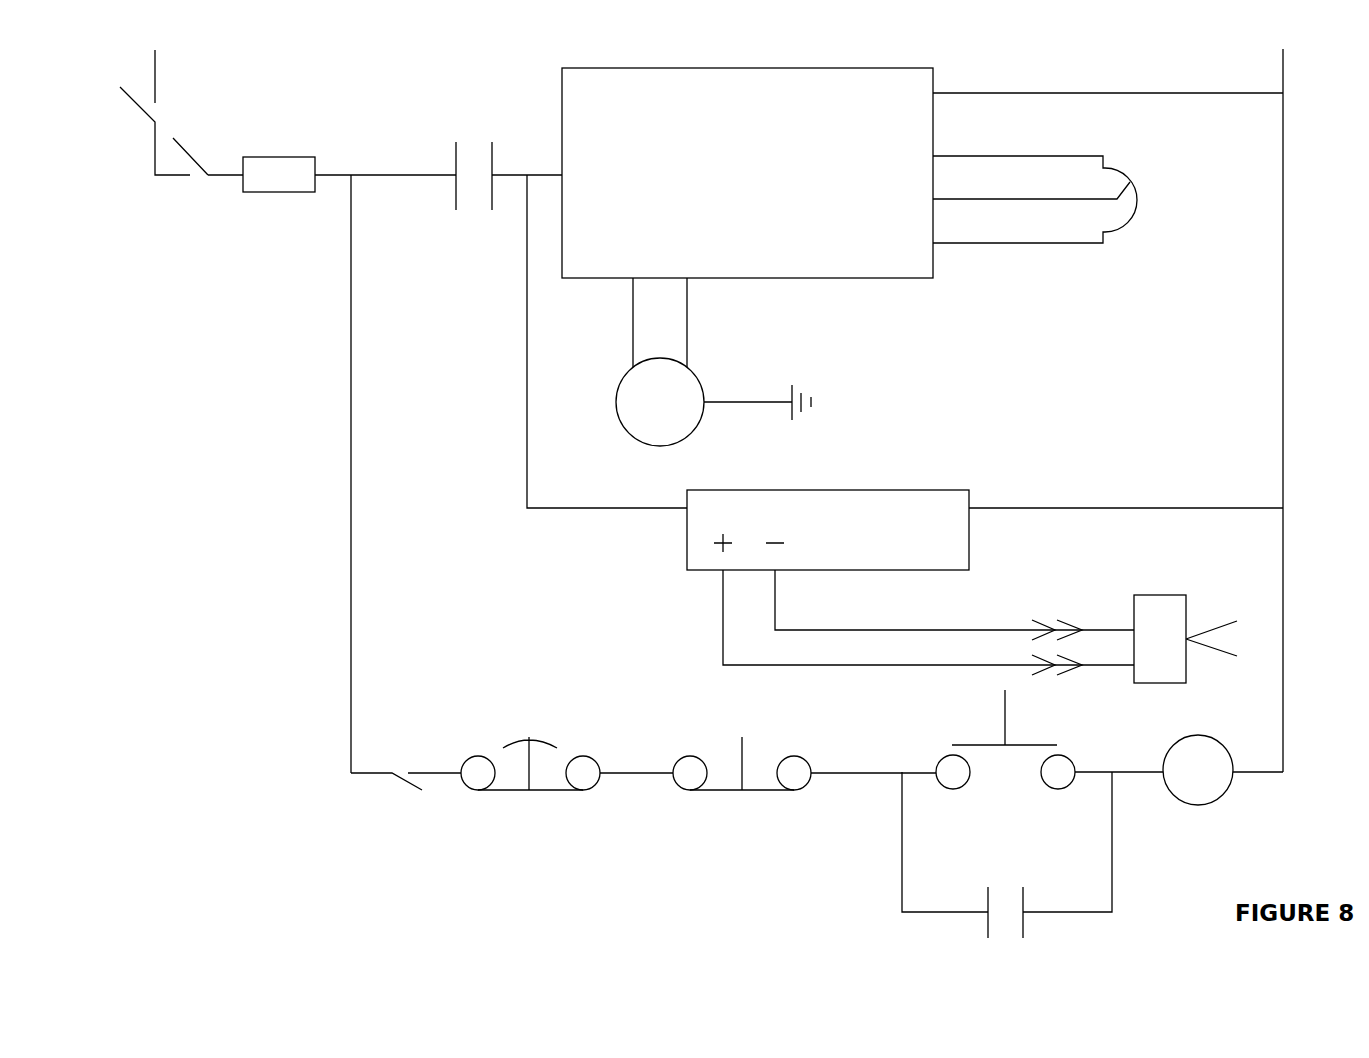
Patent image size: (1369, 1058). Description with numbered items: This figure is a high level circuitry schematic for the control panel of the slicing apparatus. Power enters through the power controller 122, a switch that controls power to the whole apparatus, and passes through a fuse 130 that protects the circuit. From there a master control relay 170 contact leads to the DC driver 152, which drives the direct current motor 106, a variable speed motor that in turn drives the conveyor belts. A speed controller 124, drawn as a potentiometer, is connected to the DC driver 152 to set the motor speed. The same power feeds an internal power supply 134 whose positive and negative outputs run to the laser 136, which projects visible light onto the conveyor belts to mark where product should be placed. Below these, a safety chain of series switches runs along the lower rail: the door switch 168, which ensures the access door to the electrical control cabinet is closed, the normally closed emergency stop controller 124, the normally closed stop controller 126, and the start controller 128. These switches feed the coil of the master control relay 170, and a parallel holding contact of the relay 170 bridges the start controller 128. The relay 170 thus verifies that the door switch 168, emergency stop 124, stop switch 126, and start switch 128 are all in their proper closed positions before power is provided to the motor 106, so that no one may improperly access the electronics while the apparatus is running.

The power controller 122 is at (180, 112).
The fuse 130 is at (279, 205).
The master control relay 170 is at (840, 517).
The DC driver 152 is at (747, 173).
The emergency stop controller 124 is at (862, 520).
The motor 106 is at (713, 362).
The internal power supply 134 is at (910, 582).
The laser 136 is at (1186, 613).
The door switch 168 is at (406, 829).
The stop controller 126 is at (742, 811).
The start controller 128 is at (1005, 770).